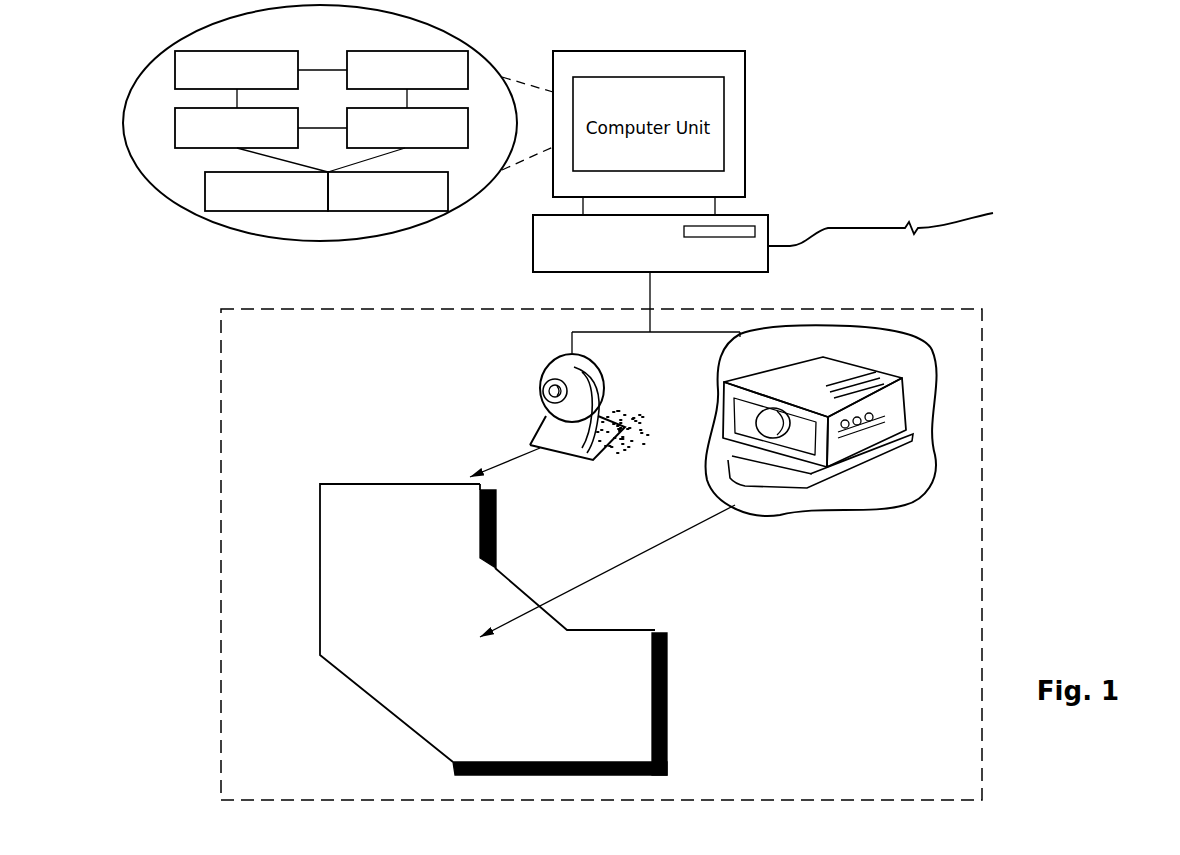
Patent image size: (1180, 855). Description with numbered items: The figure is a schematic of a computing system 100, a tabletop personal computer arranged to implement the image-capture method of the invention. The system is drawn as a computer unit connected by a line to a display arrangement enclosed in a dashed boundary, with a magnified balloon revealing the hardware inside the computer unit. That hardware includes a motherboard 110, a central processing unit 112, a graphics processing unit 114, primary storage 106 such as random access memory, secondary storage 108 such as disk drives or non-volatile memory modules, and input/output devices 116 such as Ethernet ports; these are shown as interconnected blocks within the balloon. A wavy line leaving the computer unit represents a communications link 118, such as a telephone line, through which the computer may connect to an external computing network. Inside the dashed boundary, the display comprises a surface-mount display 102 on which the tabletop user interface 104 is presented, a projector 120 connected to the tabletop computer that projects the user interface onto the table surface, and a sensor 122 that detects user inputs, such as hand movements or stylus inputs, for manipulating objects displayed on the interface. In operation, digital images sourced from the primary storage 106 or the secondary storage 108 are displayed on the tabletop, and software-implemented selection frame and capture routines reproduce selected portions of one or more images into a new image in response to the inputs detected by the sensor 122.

The computing system 100 is at (985, 375).
The surface-mount display 102 is at (660, 628).
The user interface 104 is at (615, 722).
The primary storage 106 is at (407, 70).
The secondary storage 108 is at (236, 70).
The motherboard 110 is at (266, 191).
The central processing unit 112 is at (388, 191).
The graphics processing unit 114 is at (407, 128).
The input/output devices 116 is at (236, 128).
The communications link 118 is at (829, 224).
The projector 120 is at (890, 462).
The sensor 122 is at (535, 395).